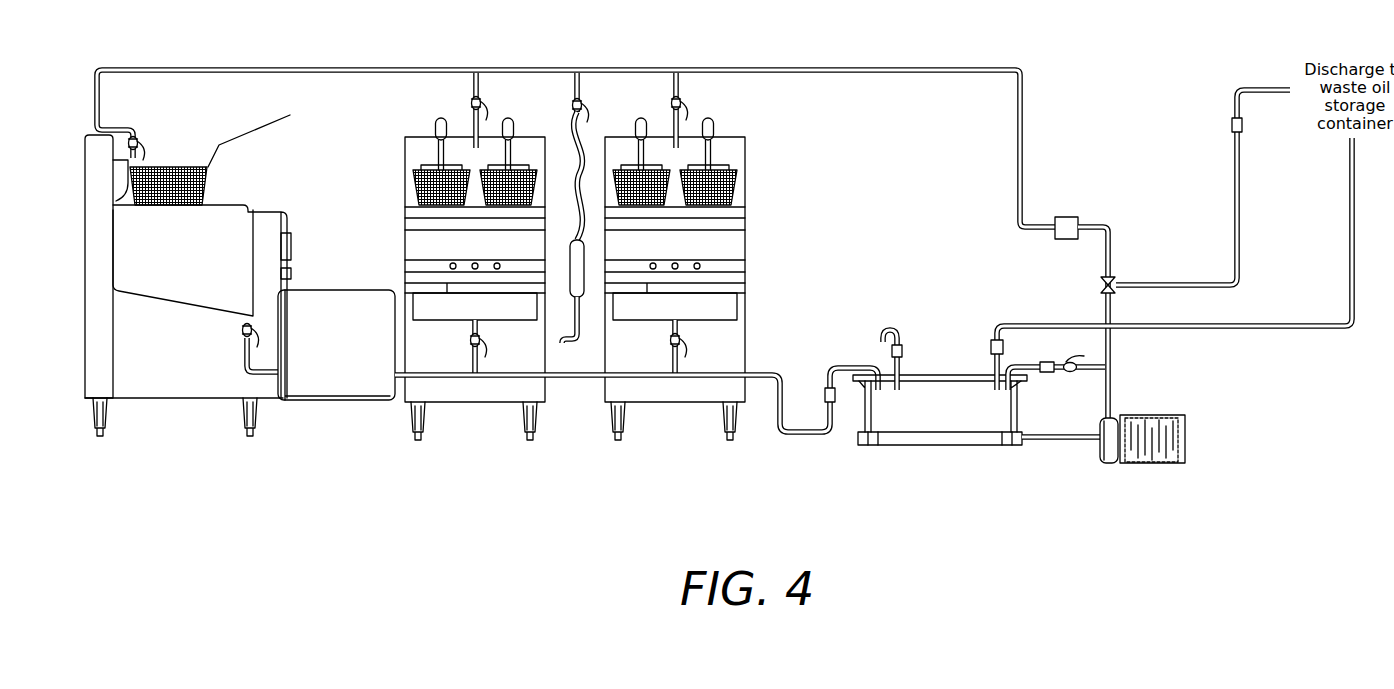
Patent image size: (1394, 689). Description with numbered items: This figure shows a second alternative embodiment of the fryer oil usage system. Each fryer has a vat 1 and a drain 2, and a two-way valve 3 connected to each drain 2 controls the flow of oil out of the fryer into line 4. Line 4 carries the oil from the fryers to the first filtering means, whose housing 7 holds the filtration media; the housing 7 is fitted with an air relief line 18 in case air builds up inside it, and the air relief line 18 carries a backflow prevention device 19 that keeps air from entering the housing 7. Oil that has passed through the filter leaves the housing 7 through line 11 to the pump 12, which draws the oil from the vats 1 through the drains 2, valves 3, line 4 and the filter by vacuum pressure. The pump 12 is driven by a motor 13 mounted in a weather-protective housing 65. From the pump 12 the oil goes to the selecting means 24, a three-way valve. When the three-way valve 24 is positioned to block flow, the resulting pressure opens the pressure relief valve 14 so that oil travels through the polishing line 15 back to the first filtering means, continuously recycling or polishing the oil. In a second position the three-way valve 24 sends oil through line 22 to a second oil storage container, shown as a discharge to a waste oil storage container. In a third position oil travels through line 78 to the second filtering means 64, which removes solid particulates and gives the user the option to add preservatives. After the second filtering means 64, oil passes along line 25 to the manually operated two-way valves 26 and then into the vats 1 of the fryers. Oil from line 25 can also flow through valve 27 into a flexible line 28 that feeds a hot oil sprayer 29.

The vat 1 is at (242, 268).
The drain 2 is at (472, 325).
The two-way valve 3 is at (243, 332).
The line 4 is at (395, 398).
The housing 7 is at (957, 422).
The line 11 is at (1080, 437).
The pump 12 is at (1100, 462).
The motor 13 is at (1147, 455).
The pressure relief valve 14 is at (1071, 358).
The polishing line 15 is at (1093, 369).
The air relief line 18 is at (1017, 323).
The backflow prevention device 19 is at (990, 347).
The line 22 is at (1240, 200).
The selecting means 24 is at (1113, 282).
The line 25 is at (1022, 117).
The valve 26 is at (140, 142).
The valve 27 is at (579, 97).
The flexible line 28 is at (581, 155).
The hot oil sprayer 29 is at (570, 340).
The second filtering means 64 is at (1067, 217).
The weather-protective housing 65 is at (1185, 443).
The line 78 is at (1112, 226).